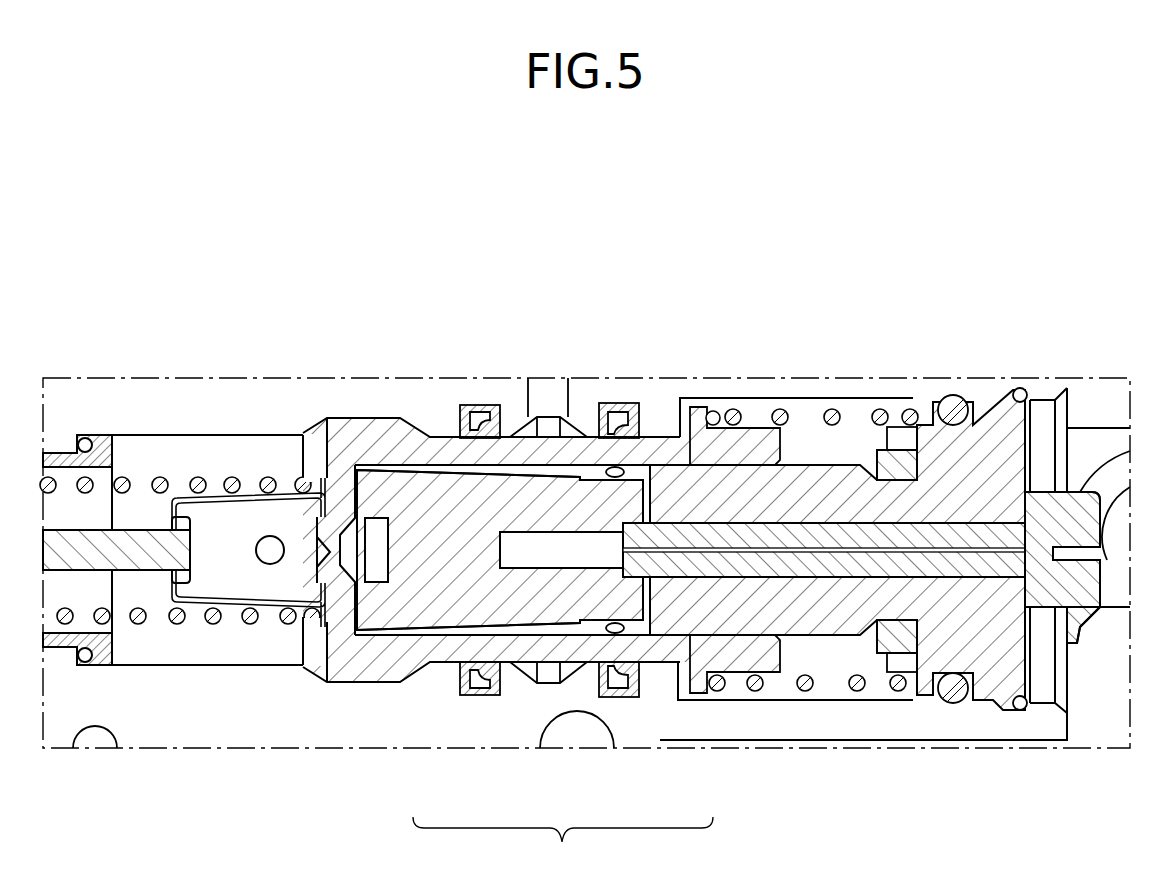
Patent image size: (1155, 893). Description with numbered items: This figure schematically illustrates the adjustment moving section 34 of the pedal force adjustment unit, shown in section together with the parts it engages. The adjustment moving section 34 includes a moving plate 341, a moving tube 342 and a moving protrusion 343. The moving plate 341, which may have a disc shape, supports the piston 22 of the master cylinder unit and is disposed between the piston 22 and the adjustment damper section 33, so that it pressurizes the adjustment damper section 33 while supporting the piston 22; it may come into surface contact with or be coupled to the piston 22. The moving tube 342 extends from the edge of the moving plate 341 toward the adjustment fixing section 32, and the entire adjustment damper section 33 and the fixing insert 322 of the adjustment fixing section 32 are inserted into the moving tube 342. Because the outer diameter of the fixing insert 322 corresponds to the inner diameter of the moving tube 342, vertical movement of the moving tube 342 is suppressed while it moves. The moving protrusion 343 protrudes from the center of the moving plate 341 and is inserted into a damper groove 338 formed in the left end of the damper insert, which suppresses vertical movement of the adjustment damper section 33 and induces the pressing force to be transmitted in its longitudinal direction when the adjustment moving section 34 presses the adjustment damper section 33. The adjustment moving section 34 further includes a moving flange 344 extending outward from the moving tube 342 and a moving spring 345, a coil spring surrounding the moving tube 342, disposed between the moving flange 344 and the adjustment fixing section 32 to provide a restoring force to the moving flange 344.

The piston 22 is at (213, 492).
The damper groove 338 is at (382, 530).
The adjustment damper section 33 is at (588, 478).
The fixing insert 322 is at (817, 463).
The adjustment fixing section 32 is at (837, 637).
The adjustment moving section 34 is at (563, 847).
The moving plate 341 is at (322, 575).
The moving tube 342 is at (447, 647).
The moving protrusion 343 is at (427, 547).
The moving flange 344 is at (697, 680).
The moving spring 345 is at (753, 690).